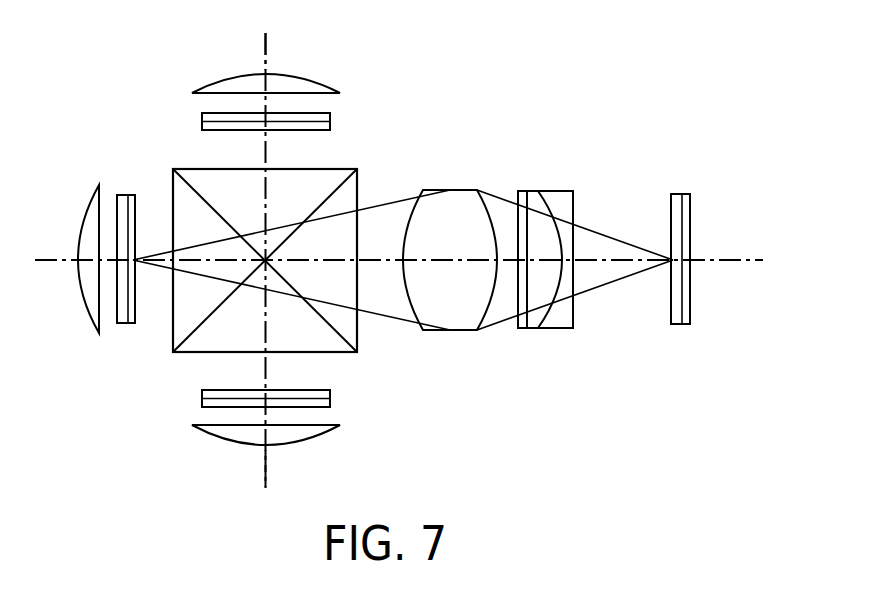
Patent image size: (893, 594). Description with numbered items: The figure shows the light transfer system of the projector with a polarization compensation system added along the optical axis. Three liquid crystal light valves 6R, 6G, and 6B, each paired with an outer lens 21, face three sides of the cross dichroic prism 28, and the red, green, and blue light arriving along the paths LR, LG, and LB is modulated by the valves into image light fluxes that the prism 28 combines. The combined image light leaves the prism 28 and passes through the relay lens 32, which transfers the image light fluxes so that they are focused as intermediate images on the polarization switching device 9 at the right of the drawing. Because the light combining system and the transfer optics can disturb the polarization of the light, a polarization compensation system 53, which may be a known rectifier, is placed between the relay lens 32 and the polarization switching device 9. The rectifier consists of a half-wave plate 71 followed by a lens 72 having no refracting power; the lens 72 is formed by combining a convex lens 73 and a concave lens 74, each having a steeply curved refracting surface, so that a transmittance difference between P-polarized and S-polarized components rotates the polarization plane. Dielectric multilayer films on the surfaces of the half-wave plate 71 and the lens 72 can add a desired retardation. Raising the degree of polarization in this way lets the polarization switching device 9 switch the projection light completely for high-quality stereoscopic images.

The polarization switching device 9 is at (680, 193).
The field lens 21 is at (327, 82).
The cross dichroic prism 28 is at (353, 341).
The relay lens 32 is at (460, 190).
The polarization compensation system 53 is at (544, 276).
The liquid crystal light valve 6B is at (330, 121).
The liquid crystal light valve 6G is at (127, 323).
The liquid crystal light valve 6R is at (330, 399).
The half-wave plate 71 is at (520, 328).
The lens having no refracting power 72 is at (565, 322).
The convex lens 73 is at (535, 328).
The concave lens 74 is at (563, 328).
The blue light path LB is at (266, 48).
The green light path LG is at (45, 258).
The red light path LR is at (265, 472).